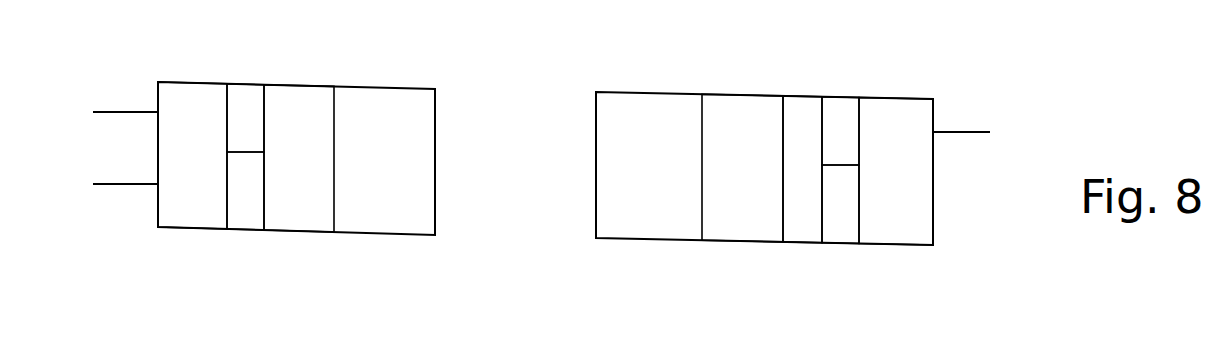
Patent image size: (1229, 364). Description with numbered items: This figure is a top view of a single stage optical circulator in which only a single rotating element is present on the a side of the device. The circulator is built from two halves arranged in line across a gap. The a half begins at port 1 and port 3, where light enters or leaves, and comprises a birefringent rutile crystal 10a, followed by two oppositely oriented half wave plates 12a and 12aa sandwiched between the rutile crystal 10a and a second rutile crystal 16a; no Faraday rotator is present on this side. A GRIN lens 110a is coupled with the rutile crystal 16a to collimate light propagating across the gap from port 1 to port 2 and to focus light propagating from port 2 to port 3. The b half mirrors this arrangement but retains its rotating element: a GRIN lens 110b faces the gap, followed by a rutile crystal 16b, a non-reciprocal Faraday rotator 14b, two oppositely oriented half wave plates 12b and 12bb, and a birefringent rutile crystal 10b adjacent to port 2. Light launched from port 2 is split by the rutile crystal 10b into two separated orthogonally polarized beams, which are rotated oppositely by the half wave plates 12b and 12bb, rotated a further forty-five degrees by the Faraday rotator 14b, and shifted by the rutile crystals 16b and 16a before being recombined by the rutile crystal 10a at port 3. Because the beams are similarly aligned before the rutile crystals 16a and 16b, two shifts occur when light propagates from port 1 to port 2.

The port 1 is at (125, 94).
The port 2 is at (973, 117).
The port 3 is at (125, 164).
The GRIN lens 110a is at (368, 95).
The rutile crystal 10a is at (213, 222).
The half wave plate 12a is at (247, 95).
The half wave plate 12aa is at (242, 221).
The rutile crystal 16a is at (307, 92).
The GRIN lens 110b is at (630, 100).
The rutile crystal 16b is at (752, 235).
The Faraday rotator 14b is at (793, 238).
The half wave plate 12b is at (845, 103).
The half wave plate 12bb is at (838, 233).
The rutile crystal 10b is at (917, 100).